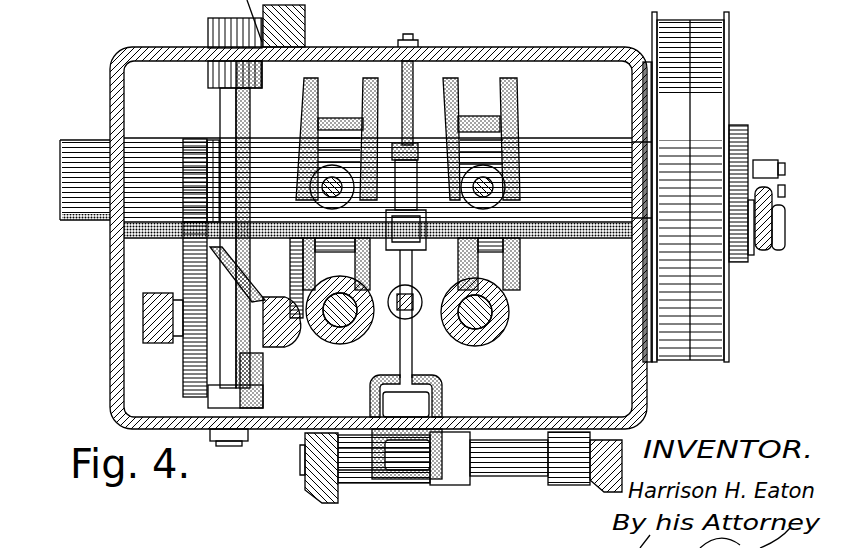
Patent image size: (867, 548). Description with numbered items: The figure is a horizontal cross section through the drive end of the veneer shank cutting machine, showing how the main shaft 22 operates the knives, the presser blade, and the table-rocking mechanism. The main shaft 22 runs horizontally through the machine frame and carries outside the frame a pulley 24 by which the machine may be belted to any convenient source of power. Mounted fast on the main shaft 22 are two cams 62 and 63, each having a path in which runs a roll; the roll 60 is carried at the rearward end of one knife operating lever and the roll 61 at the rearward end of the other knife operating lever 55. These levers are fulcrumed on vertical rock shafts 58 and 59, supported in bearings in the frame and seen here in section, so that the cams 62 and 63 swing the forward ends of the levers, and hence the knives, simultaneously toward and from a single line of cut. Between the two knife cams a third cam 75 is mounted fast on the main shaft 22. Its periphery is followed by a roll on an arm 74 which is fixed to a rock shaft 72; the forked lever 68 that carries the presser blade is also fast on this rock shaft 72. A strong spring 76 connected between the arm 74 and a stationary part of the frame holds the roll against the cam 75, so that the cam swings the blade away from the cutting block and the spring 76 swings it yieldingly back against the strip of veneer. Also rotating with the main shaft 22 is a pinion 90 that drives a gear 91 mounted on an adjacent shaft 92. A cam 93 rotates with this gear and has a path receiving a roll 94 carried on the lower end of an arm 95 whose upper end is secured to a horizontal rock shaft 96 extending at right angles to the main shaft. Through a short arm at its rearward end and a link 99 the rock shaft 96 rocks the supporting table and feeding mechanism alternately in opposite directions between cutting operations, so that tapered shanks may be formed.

The main shaft 22 is at (60, 150).
The pulley 24 is at (658, 40).
The knife operating lever 55 is at (381, 217).
The rock shaft 58 is at (330, 338).
The rock shaft 59 is at (505, 325).
The roll 60 is at (322, 174).
The roll 61 is at (498, 176).
The cam 62 is at (343, 118).
The cam 63 is at (480, 116).
The lever 68 is at (387, 0).
The rock shaft 72 is at (506, 470).
The arm 74 is at (415, 370).
The cam 75 is at (412, 144).
The spring 76 is at (396, 315).
The pinion 90 is at (193, 140).
The gear 91 is at (183, 268).
The shaft 92 is at (143, 318).
The cam 93 is at (262, 365).
The roll 94 is at (266, 392).
The arm 95 is at (250, 440).
The rock shaft 96 is at (232, 94).
The link 99 is at (305, 18).